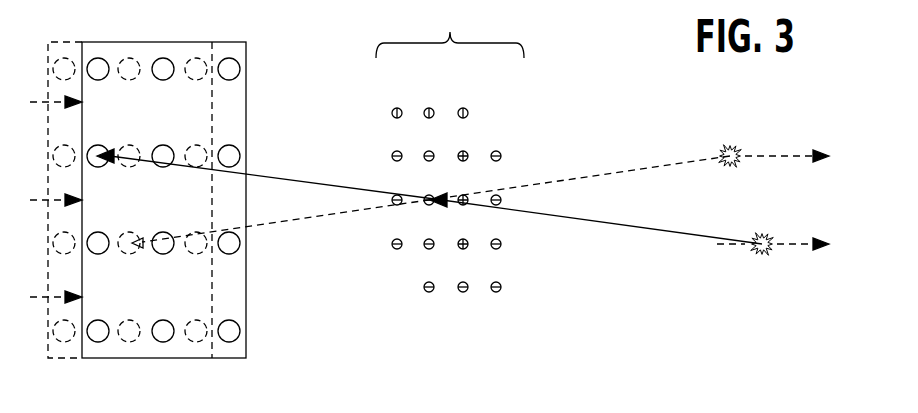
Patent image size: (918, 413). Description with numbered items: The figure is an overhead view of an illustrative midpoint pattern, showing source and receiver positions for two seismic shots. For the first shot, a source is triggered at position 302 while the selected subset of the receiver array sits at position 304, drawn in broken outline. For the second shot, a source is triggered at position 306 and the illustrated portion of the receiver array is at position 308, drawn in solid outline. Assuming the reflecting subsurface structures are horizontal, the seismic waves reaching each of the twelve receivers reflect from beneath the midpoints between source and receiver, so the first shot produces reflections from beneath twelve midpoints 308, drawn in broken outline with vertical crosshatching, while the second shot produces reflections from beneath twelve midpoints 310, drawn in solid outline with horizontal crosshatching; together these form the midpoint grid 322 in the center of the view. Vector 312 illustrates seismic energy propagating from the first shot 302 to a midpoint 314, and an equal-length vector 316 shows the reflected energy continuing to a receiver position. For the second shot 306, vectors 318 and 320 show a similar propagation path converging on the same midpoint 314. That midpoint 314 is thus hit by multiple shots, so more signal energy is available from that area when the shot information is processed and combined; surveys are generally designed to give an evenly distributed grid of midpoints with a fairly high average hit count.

The source position 302 is at (740, 165).
The receiver array position 304 is at (213, 52).
The source position 306 is at (770, 252).
The receiver array position 308 is at (247, 50).
The midpoints 310 is at (503, 150).
The vector 312 is at (644, 166).
The midpoint 314 is at (446, 198).
The vector 316 is at (325, 219).
The vector 318 is at (638, 228).
The vector 320 is at (301, 181).
The pixel array 322 is at (450, 29).